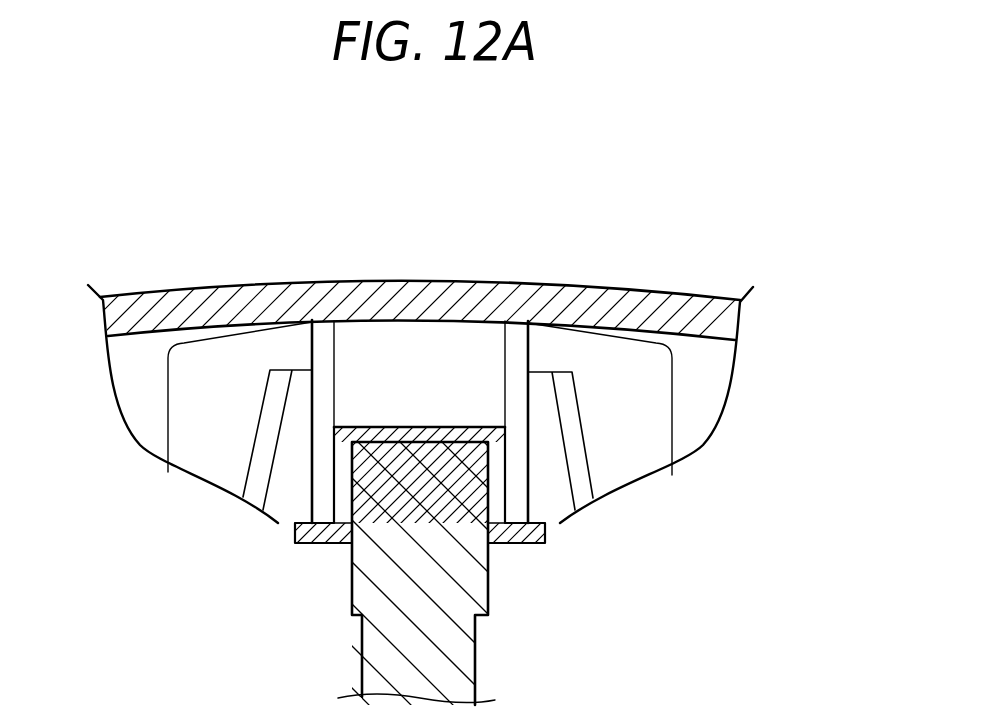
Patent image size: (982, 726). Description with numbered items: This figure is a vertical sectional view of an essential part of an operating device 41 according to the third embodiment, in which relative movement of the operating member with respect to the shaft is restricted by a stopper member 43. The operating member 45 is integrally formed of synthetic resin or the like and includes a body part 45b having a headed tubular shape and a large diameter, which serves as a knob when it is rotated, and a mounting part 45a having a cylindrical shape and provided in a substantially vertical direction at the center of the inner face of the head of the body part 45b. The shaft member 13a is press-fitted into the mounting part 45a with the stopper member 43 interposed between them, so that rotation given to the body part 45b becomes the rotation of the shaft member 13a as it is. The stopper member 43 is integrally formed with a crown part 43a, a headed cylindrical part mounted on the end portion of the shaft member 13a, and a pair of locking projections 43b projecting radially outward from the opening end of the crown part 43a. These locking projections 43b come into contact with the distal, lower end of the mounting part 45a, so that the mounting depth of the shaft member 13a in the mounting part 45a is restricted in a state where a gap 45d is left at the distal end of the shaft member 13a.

The operating device 41 is at (146, 276).
The stopper member 43 is at (418, 413).
The crown part 43a is at (493, 463).
The locking projections 43b is at (322, 538).
The operating member 45 is at (415, 374).
The mounting part 45a is at (322, 463).
The body part 45b is at (713, 322).
The gap 45d is at (450, 388).
The shaft member 13a is at (452, 562).